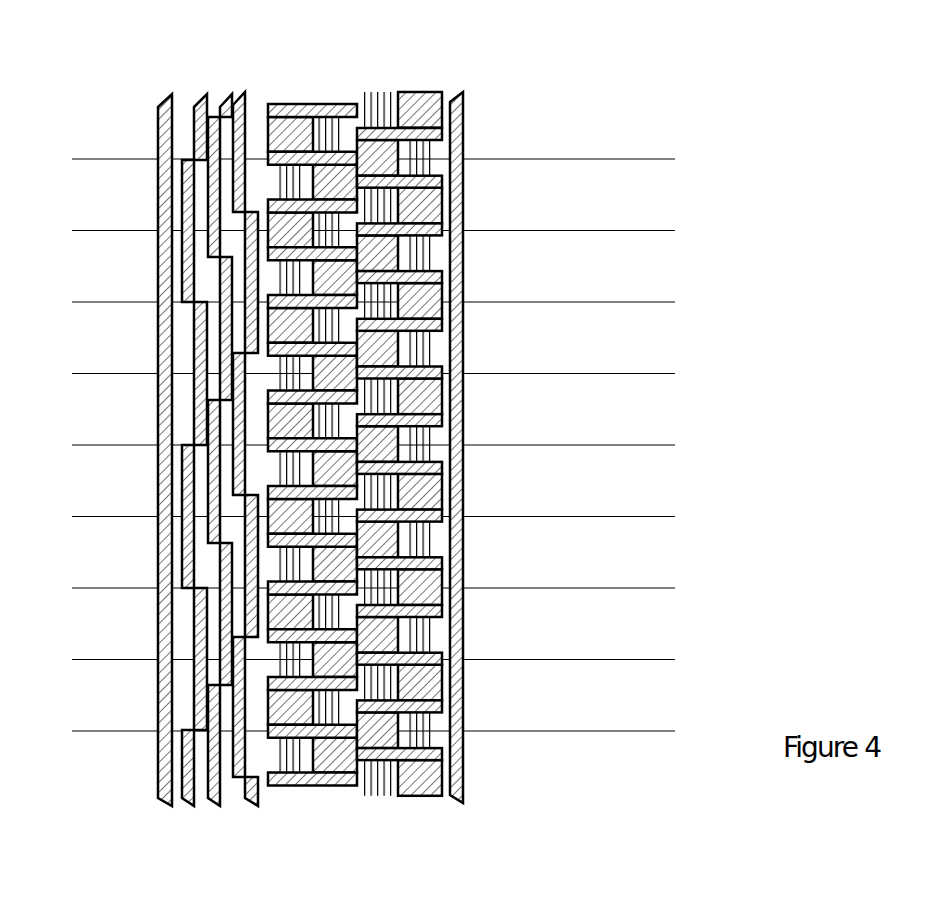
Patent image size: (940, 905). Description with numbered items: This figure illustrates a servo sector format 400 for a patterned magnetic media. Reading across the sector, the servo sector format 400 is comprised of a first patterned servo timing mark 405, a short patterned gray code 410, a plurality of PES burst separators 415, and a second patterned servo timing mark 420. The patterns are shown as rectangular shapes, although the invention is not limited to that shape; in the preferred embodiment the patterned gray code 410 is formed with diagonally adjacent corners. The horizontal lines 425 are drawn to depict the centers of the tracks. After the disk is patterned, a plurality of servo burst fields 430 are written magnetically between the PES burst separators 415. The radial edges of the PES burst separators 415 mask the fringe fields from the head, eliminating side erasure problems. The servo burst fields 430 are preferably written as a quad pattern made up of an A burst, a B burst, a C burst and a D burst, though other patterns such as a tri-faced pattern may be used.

The servo sector format 400 is at (738, 210).
The first patterned servo timing mark 405 is at (166, 87).
The short patterned gray code 410 is at (247, 87).
The PES burst separators 415 is at (278, 710).
The second patterned servo timing mark 420 is at (471, 787).
The horizontal lines 425 is at (678, 385).
The servo burst fields 430 is at (382, 687).